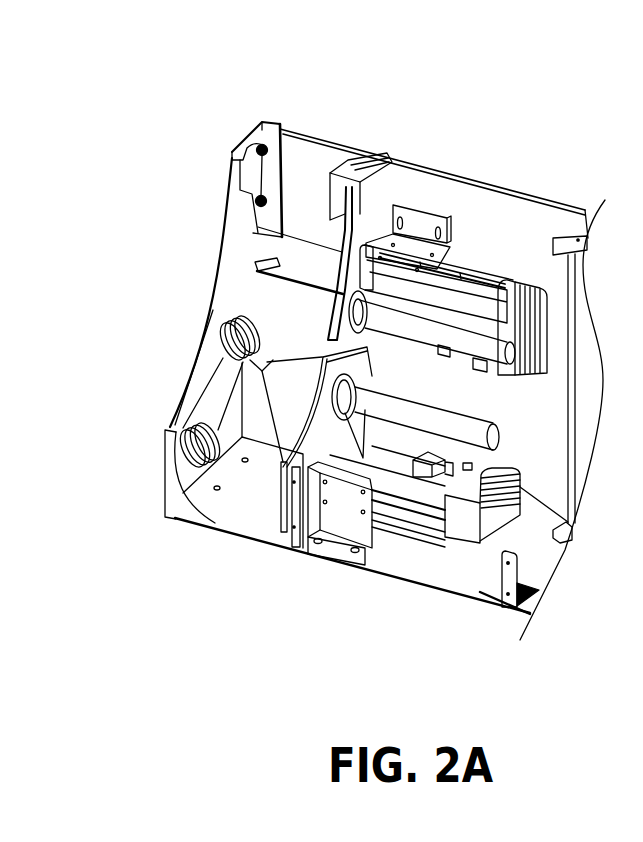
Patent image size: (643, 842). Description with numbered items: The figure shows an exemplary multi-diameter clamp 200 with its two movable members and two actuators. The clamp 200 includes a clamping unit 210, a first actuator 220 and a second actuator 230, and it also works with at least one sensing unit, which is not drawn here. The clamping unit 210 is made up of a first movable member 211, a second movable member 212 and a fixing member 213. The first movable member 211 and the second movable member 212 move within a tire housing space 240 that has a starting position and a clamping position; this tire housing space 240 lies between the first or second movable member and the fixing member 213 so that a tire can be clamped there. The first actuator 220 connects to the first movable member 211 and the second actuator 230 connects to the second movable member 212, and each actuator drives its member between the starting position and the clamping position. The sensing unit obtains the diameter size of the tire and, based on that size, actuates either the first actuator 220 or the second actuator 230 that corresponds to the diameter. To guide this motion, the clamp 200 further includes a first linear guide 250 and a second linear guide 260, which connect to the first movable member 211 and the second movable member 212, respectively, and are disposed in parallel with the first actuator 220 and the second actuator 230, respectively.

The multi-diameter clamp 200 is at (195, 38).
The clamping unit 210 is at (170, 178).
The first movable member 211 is at (328, 322).
The second movable member 212 is at (283, 457).
The fixing member 213 is at (243, 257).
The first actuator 220 is at (507, 290).
The second actuator 230 is at (480, 522).
The tire housing space 240 is at (302, 250).
The first linear guide 250 is at (408, 327).
The second linear guide 260 is at (410, 413).